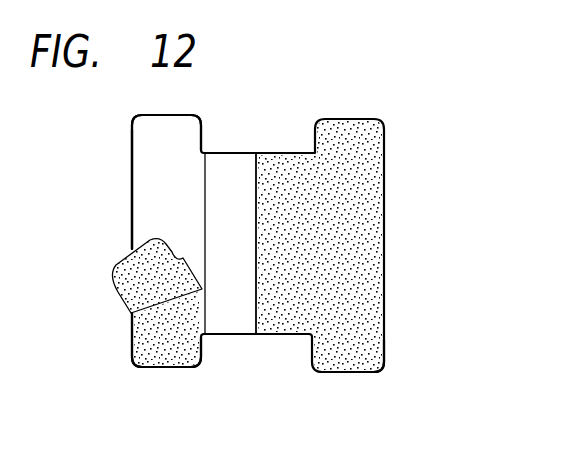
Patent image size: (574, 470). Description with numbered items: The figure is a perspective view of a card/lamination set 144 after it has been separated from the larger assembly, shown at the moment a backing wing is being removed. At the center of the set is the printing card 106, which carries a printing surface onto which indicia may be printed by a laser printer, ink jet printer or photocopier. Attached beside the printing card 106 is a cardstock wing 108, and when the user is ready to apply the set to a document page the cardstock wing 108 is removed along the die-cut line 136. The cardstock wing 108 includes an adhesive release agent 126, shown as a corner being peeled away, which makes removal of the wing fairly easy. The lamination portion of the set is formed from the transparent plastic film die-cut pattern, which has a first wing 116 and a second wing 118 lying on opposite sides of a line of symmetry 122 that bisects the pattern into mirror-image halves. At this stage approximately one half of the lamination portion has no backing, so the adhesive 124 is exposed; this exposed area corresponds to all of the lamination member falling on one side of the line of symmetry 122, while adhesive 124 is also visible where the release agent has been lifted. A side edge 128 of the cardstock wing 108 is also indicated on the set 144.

The card/lamination set 144 is at (386, 97).
The cardstock wing 108 is at (160, 122).
The side edge 128 is at (140, 197).
The die-cut line 136 is at (205, 168).
The line of symmetry 122 is at (257, 168).
The adhesive 124 is at (357, 171).
The adhesive release agent 126 is at (125, 292).
The printing card 106 is at (233, 326).
The first wing 116 is at (373, 369).
The second wing 118 is at (172, 391).